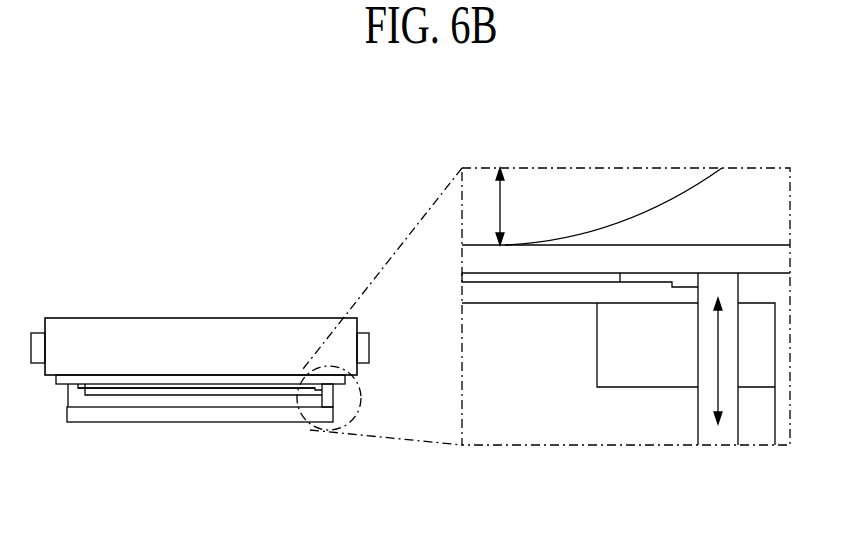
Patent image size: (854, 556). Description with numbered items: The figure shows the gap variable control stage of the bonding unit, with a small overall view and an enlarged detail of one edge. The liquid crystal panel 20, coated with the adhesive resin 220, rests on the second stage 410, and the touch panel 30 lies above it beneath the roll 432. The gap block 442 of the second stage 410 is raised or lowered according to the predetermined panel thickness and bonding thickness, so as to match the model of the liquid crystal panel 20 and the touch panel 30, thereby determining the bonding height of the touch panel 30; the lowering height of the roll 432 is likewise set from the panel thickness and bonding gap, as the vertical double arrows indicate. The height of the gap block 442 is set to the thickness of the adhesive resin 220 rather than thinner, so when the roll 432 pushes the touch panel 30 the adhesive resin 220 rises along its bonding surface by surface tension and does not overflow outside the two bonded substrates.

The roll 432 is at (205, 340).
The touch panel 30 is at (157, 382).
The adhesive resin 220 is at (200, 391).
The liquid crystal panel 20 is at (115, 400).
The second stage 410 is at (255, 412).
The gap block 442 is at (331, 402).